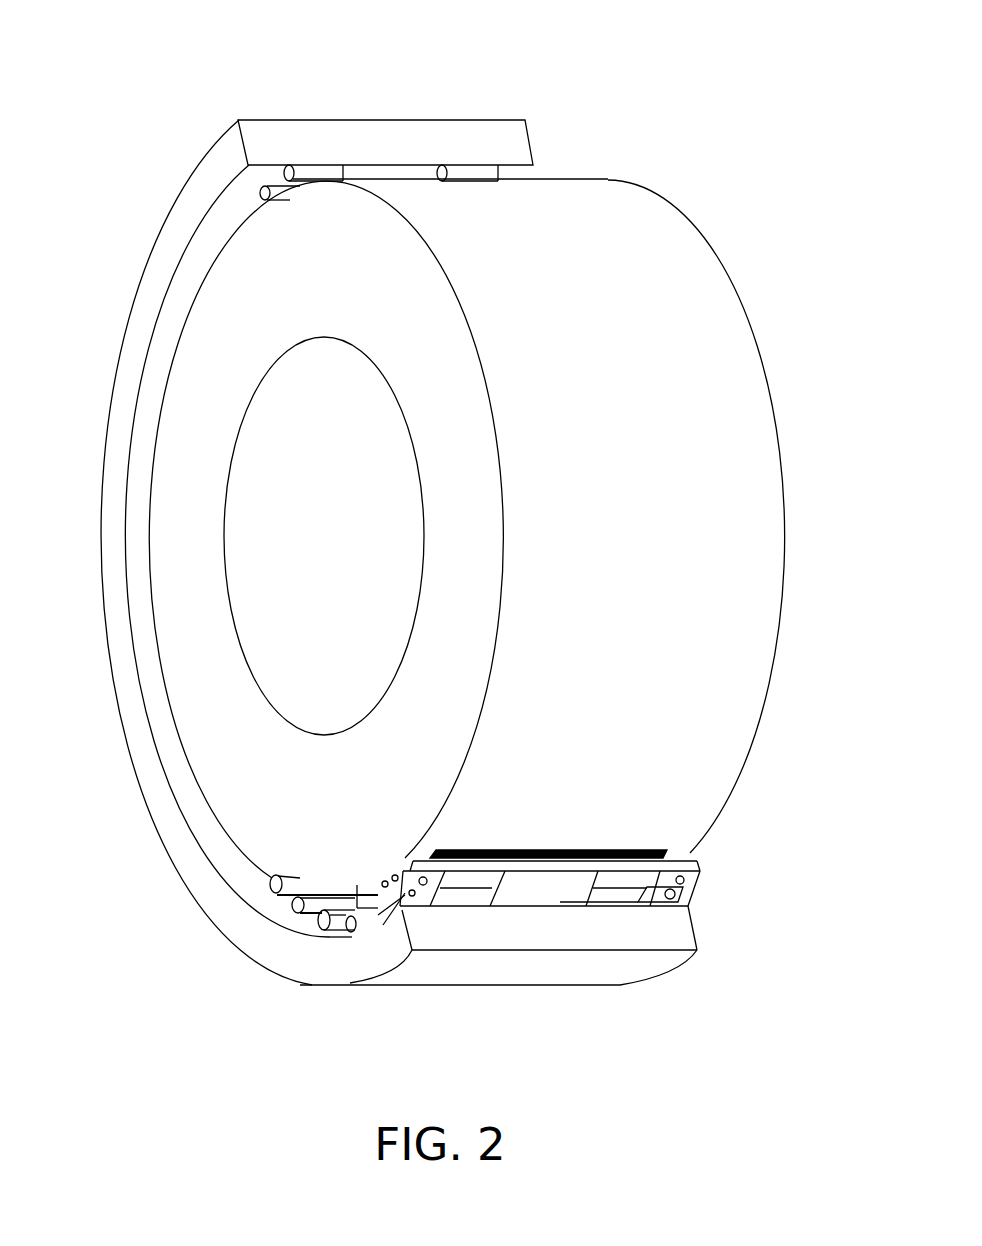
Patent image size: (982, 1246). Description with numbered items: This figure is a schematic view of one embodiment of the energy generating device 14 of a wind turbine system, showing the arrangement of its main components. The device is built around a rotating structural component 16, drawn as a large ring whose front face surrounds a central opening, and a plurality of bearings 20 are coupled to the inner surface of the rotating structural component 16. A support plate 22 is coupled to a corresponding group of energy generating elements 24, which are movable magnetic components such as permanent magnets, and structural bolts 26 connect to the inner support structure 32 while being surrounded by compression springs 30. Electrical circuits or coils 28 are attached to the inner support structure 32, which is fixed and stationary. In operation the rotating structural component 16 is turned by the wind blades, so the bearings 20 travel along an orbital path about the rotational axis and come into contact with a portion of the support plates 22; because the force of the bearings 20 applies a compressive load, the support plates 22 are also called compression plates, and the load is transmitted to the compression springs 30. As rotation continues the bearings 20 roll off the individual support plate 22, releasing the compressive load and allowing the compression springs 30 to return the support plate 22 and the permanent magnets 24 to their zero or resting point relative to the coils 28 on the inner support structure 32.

The energy generating device 14 is at (270, 50).
The rotating structural component 16 is at (113, 535).
The bearings 20 is at (293, 903).
The support plates 22 is at (521, 895).
The energy generating elements 24 is at (700, 848).
The structural bolts 26 is at (688, 888).
The electrical circuits or coils 28 is at (605, 850).
The compression springs 30 is at (373, 900).
The inner support structure 32 is at (235, 337).